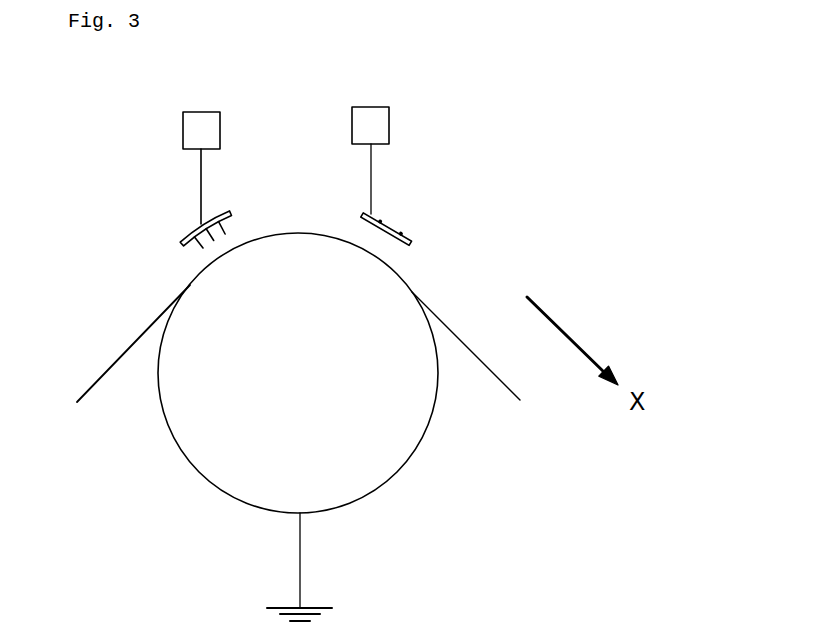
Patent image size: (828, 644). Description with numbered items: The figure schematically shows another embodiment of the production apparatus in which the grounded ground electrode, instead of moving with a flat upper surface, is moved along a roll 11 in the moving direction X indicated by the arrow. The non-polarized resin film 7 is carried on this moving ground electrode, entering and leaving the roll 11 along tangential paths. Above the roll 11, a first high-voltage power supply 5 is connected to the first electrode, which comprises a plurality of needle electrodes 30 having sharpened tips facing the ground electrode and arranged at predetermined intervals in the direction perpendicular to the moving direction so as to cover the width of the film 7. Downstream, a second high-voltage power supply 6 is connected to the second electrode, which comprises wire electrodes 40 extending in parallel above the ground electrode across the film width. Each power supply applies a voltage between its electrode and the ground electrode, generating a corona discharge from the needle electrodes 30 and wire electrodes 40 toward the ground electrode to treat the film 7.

The first high-voltage power supply 5 is at (220, 125).
The second high-voltage power supply 6 is at (389, 125).
The non-polarized resin film 7 is at (132, 343).
The roll 11 is at (362, 455).
The needle electrode 30 is at (224, 225).
The wire electrode 40 is at (378, 218).